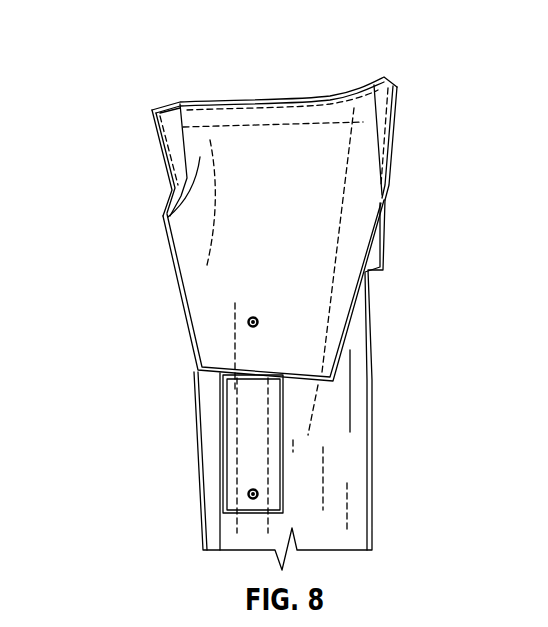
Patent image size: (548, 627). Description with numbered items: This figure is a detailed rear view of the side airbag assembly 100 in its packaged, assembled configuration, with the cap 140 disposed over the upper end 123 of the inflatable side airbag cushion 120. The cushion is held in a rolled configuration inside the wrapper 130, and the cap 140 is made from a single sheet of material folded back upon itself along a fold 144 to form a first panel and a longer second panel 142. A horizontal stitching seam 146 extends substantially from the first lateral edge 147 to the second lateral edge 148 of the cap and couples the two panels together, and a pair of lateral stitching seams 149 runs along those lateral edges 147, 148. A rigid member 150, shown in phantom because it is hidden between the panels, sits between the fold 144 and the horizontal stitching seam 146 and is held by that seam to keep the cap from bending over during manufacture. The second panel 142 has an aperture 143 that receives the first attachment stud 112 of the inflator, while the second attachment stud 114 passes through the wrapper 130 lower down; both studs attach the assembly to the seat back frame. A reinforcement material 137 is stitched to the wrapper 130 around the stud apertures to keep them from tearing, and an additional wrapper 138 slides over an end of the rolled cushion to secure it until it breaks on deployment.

The side airbag assembly 100 is at (146, 60).
The upper end 123 is at (140, 115).
The cap 140 is at (392, 206).
The first lateral edge 147 is at (173, 157).
The second lateral edge 148 is at (389, 150).
The lateral stitching seams 149 is at (227, 125).
The rigid member 150 is at (293, 115).
The horizontal stitching seam 146 is at (334, 122).
The fold 144 is at (263, 103).
The second panel 142 is at (197, 320).
The first attachment stud 112 is at (258, 323).
The aperture 143 is at (248, 320).
The inflatable side airbag cushion 120 is at (353, 392).
The wrapper 130 is at (357, 430).
The second attachment stud 114 is at (260, 494).
The reinforcement material 137 is at (232, 438).
The additional wrapper 138 is at (233, 477).